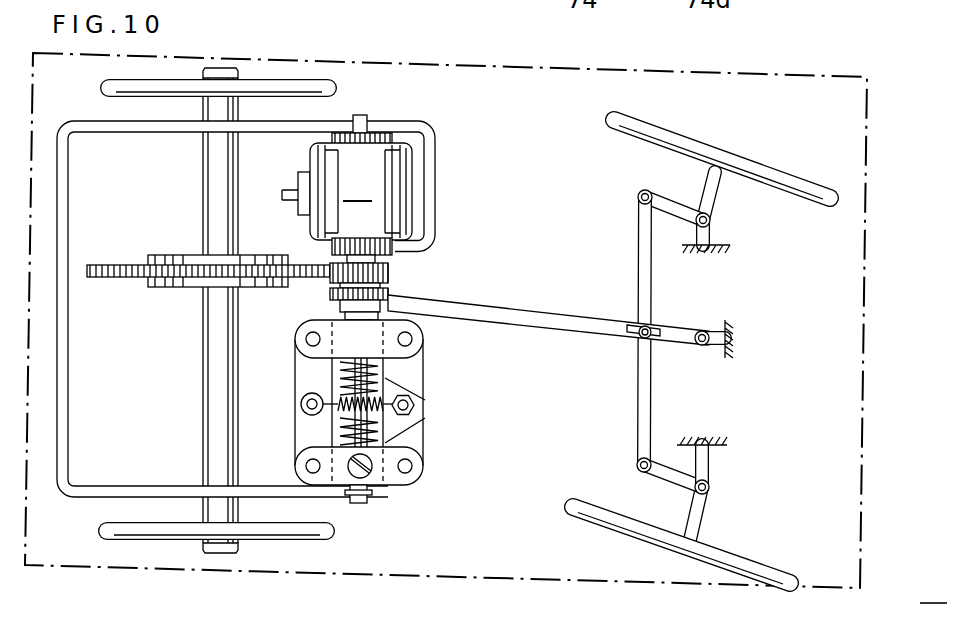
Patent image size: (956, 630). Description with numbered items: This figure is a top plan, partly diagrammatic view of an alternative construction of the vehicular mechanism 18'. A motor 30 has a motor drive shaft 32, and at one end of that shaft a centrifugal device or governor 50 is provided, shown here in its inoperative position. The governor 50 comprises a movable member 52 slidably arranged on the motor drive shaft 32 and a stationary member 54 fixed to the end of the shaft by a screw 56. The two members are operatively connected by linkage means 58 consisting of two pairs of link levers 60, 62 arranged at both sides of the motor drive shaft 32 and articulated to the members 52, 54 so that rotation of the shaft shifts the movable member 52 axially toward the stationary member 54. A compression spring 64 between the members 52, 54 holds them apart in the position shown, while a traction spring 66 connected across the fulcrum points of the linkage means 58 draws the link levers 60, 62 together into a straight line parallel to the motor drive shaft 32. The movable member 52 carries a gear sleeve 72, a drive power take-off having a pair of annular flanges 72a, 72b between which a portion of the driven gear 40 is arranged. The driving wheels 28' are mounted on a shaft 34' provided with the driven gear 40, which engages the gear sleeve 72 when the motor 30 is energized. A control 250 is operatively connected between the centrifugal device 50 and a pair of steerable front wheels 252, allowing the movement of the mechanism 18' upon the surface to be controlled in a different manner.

The vehicular mechanism 18' is at (446, 308).
The driving wheels 28' is at (217, 302).
The motor 30 is at (393, 181).
The motor drive shaft 32 is at (363, 504).
The shaft 34' is at (176, 310).
The driven gear 40 is at (112, 264).
The centrifugal device or governor 50 is at (388, 424).
The movable member 52 is at (338, 331).
The stationary member 54 is at (382, 474).
The screw 56 is at (420, 464).
The linkage means 58 is at (288, 368).
The link lever 60 is at (298, 425).
The link lever 62 is at (413, 442).
The compression spring 64 is at (340, 431).
The traction spring 66 is at (383, 397).
The gear sleeve 72 is at (393, 272).
The annular flange 72a is at (392, 292).
The annular flange 72b is at (422, 316).
The control 250 is at (553, 317).
The steerable front wheels 252 is at (820, 203).